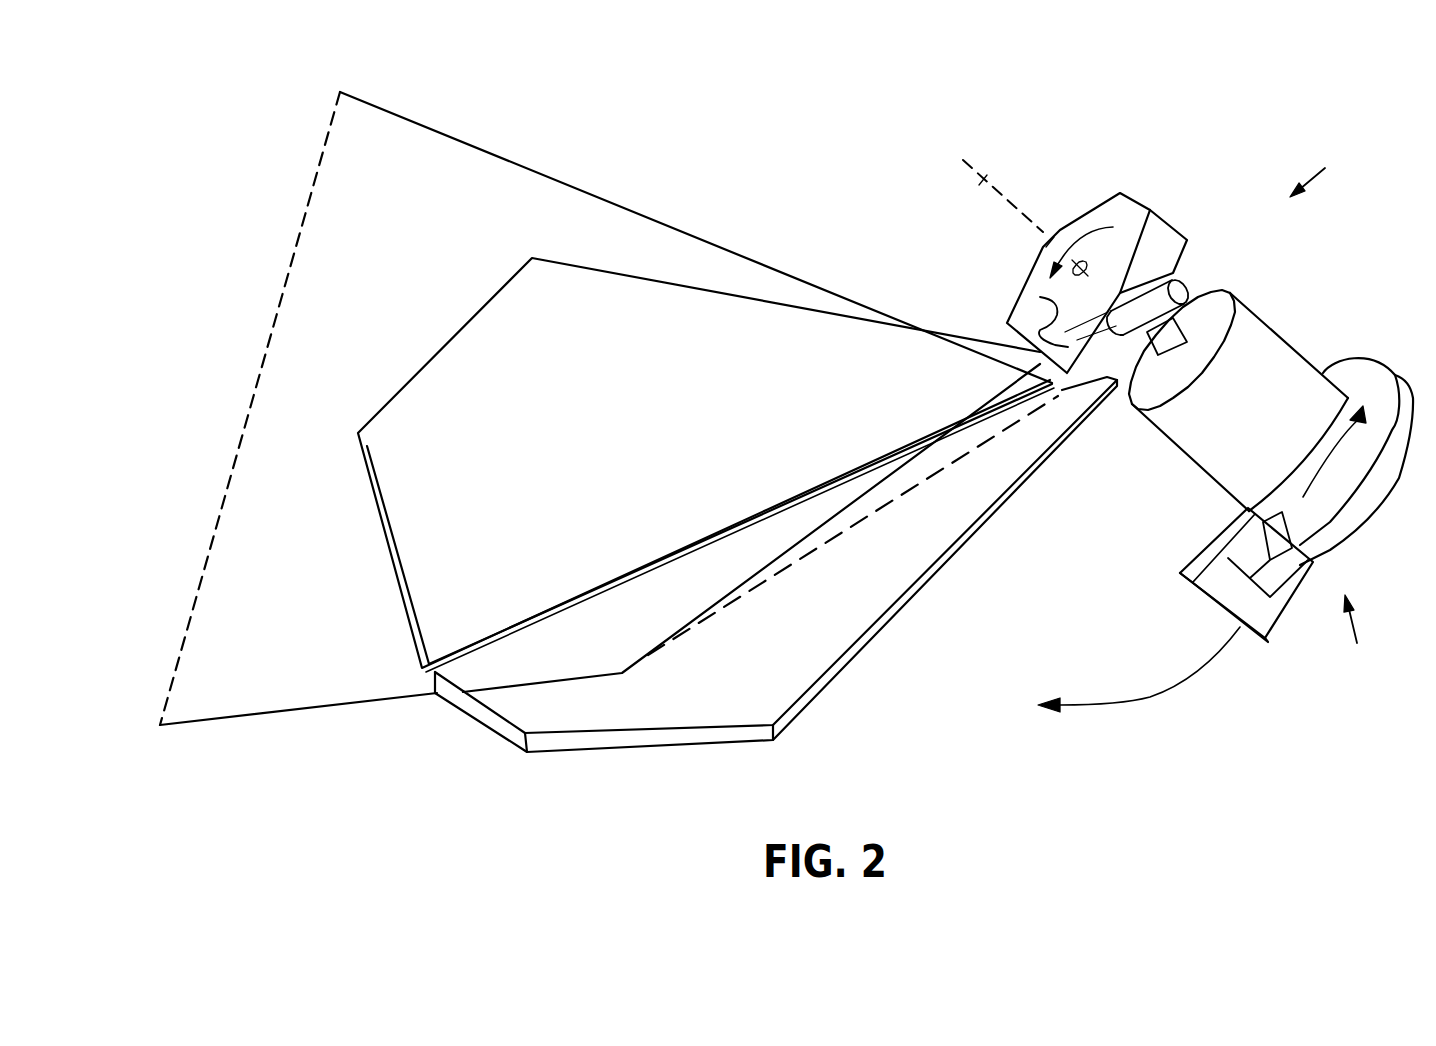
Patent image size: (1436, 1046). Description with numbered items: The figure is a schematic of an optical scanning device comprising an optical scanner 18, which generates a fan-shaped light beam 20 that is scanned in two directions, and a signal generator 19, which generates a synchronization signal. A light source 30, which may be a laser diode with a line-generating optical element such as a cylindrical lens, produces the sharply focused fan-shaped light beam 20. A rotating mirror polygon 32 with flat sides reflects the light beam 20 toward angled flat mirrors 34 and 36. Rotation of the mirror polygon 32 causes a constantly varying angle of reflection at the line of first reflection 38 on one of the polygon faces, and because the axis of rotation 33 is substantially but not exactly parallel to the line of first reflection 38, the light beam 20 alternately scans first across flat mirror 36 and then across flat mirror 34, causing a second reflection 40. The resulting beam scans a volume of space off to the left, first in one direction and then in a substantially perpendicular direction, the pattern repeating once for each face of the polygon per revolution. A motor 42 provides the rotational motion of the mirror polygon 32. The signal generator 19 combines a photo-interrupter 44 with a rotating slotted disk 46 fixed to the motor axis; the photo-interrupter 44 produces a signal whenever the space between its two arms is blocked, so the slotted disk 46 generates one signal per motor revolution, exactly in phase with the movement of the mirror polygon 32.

The optical scanner 18 is at (1328, 168).
The signal generator 19 is at (1356, 638).
The fan-shaped light beam 20 is at (313, 185).
The light source 30 is at (1182, 282).
The rotating mirror polygon 32 is at (1130, 194).
The axis of rotation 33 is at (984, 181).
The flat mirror 34 is at (887, 625).
The flat mirror 36 is at (508, 282).
The line of first reflection 38 is at (1040, 297).
The second reflection 40 is at (690, 628).
The motor 42 is at (1258, 318).
The photo-interrupter 44 is at (1180, 585).
The rotating slotted disk 46 is at (1350, 512).